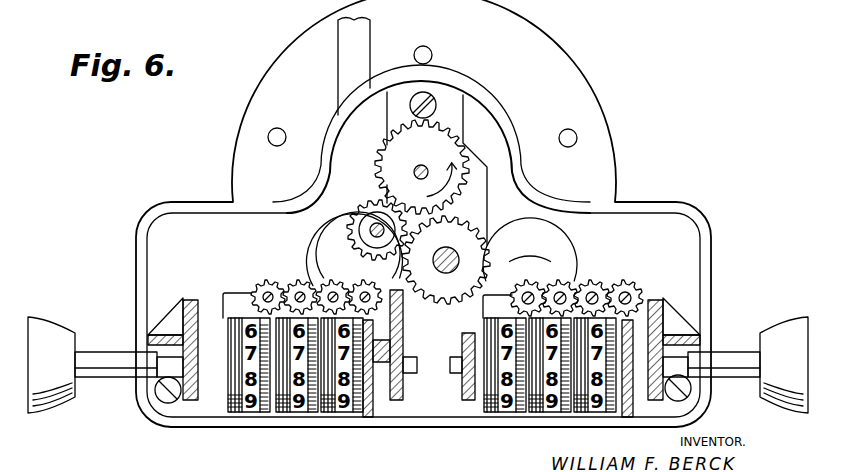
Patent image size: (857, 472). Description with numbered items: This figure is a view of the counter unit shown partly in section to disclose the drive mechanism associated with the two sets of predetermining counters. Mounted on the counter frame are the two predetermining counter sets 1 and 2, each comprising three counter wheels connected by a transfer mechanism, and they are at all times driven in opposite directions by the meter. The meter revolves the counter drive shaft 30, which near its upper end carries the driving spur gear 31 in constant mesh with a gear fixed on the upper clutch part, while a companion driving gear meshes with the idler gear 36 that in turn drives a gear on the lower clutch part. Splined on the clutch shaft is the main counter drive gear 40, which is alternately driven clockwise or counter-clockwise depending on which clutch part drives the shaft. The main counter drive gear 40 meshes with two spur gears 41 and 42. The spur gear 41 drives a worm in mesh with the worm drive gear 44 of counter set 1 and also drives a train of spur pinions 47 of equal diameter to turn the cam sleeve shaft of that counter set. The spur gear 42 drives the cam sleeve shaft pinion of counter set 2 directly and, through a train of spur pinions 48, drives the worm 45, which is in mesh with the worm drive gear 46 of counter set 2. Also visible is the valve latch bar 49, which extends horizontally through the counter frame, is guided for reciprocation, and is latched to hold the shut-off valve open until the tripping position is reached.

The predetermining counter set 1 is at (256, 426).
The predetermining counter set 2 is at (557, 417).
The counter drive shaft 30 is at (417, 178).
The driving spur gear 31 is at (432, 151).
The idler gear 36 is at (358, 213).
The main counter drive gear 40 is at (470, 238).
The spur gear 41 is at (341, 277).
The spur gear 42 is at (528, 254).
The worm drive gear 44 is at (368, 418).
The worm 45 is at (633, 282).
The worm drive gear 46 is at (628, 418).
The train of spur pinions 47 is at (332, 280).
The train of spur pinions 48 is at (566, 281).
The valve latch bar 49 is at (345, 35).